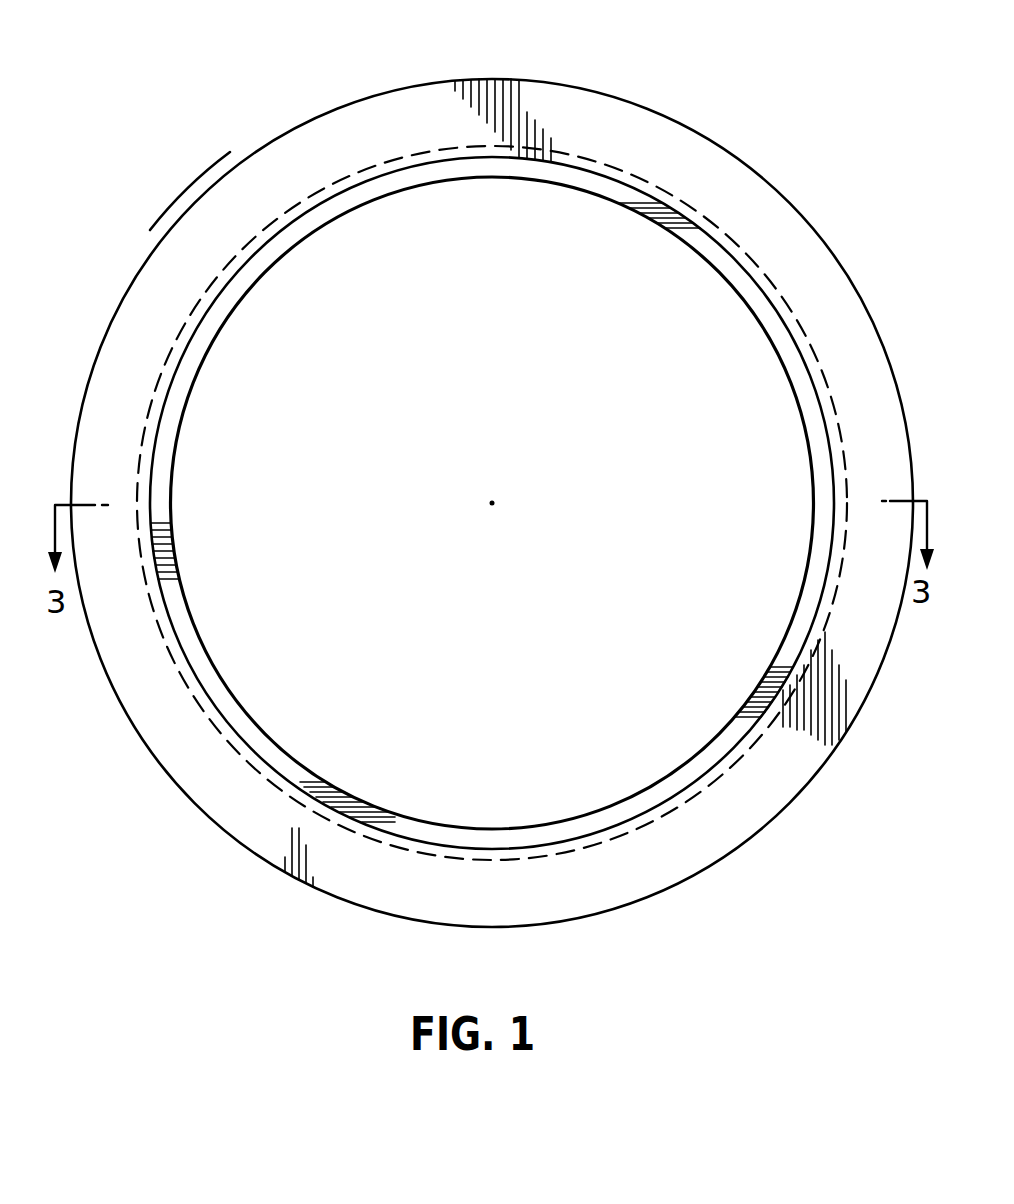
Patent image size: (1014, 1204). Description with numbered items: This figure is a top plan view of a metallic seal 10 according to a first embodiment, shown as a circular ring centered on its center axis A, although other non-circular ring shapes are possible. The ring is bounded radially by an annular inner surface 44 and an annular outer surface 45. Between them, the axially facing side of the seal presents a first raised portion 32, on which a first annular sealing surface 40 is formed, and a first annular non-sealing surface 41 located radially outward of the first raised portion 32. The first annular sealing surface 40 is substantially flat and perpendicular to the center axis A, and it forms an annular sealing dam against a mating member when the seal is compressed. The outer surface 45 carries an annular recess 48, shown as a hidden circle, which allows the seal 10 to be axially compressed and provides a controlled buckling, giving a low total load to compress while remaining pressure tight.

The metallic seal 10 is at (760, 119).
The annular outer surface 45 is at (158, 246).
The first annular non-sealing surface 41 is at (143, 337).
The annular recess 48 is at (297, 206).
The first annular sealing surface 40 is at (172, 425).
The annular inner surface 44 is at (171, 488).
The first raised portion 32 is at (181, 384).
The center axis A is at (495, 494).